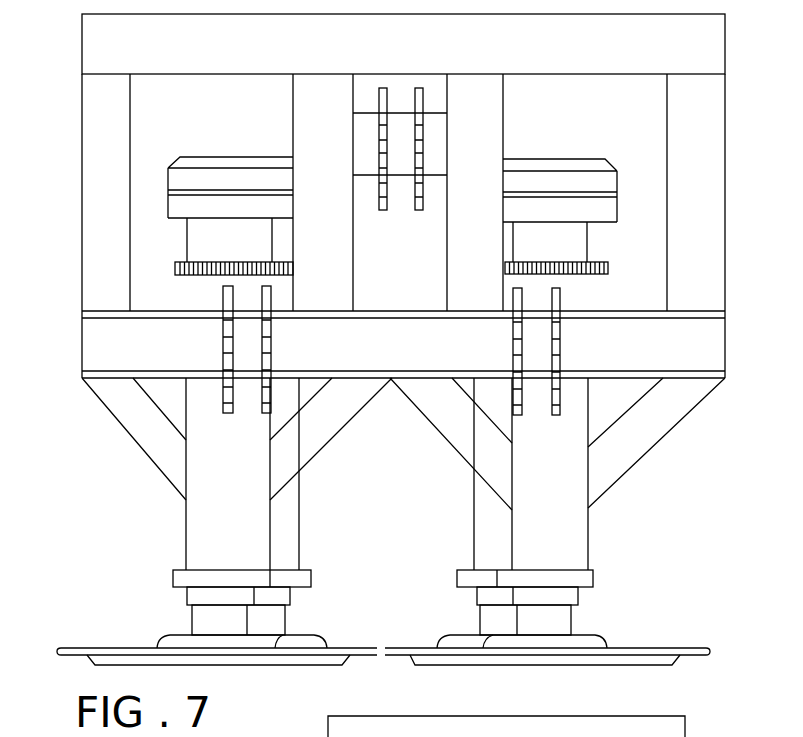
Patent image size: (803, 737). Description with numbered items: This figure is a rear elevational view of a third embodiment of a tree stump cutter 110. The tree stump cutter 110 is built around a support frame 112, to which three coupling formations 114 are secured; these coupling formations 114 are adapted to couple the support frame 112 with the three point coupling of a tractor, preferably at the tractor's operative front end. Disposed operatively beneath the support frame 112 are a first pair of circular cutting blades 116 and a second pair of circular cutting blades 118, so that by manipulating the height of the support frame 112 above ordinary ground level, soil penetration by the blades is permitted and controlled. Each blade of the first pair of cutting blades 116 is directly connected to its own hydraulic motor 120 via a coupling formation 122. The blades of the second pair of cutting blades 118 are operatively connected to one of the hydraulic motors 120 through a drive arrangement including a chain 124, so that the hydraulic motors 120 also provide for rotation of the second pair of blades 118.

The tree stump cutter 110 is at (62, 350).
The support frame 112 is at (757, 255).
The coupling formations 114 is at (424, 103).
The first pair of circular cutting blades 116 is at (75, 648).
The second pair of circular cutting blades 118 is at (437, 642).
The hydraulic motor 120 is at (206, 176).
The coupling formation 122 is at (186, 579).
The chain 124 is at (176, 262).